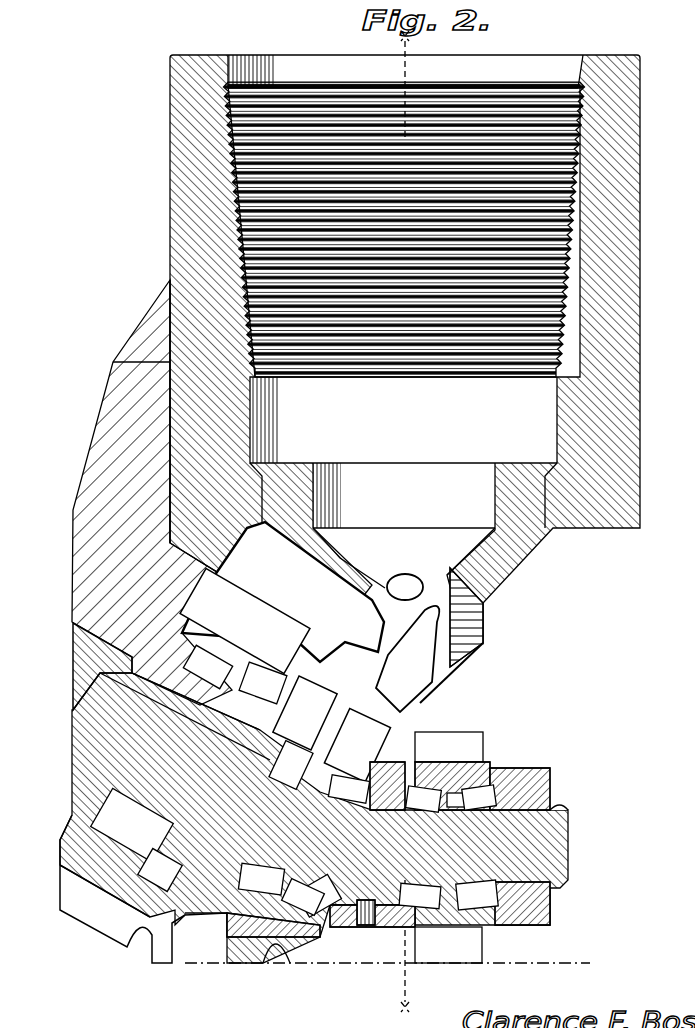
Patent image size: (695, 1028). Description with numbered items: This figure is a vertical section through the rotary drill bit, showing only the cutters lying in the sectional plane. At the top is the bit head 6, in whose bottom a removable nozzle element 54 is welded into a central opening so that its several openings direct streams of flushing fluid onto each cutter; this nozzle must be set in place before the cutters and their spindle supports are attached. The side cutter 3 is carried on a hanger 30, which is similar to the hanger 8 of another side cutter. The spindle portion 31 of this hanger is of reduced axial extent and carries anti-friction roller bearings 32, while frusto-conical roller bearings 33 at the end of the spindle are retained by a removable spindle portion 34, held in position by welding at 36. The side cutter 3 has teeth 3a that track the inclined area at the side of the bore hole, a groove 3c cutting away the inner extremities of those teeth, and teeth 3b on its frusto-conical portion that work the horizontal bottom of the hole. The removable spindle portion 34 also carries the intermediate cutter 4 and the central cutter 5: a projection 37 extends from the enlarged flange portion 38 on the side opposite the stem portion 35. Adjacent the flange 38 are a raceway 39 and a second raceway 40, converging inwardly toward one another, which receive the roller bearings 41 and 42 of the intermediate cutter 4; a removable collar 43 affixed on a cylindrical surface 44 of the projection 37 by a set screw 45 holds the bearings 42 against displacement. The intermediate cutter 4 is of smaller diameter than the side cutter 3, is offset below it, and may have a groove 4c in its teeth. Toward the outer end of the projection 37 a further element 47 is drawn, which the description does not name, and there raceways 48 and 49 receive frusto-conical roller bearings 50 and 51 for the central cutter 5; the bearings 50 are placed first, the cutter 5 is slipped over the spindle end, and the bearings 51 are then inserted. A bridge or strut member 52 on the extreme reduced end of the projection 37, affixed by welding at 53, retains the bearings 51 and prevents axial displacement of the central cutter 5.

The bit head 6 is at (640, 320).
The removable nozzle element 54 is at (402, 475).
The hanger 30 is at (82, 586).
The welding 36 is at (73, 652).
The stem portion 35 is at (112, 731).
The removable spindle portion 34 is at (218, 760).
The spindle portion 31 is at (115, 792).
The side cutter 3 is at (60, 889).
The teeth 3a is at (105, 925).
The groove 3c is at (140, 943).
The teeth 3b is at (165, 958).
The intermediate cutter 4 is at (265, 920).
The groove 4c is at (275, 960).
The cylindrical surface 44 is at (330, 905).
The set screw 45 is at (365, 918).
The enlarged flange portion 38 is at (212, 890).
The projection 37 is at (392, 905).
The removable collar 43 is at (402, 910).
The hanger 8 is at (389, 726).
The central cutter 5 is at (470, 920).
The anti-friction roller bearings 32 is at (205, 663).
The frusto-conical roller bearings 33 is at (262, 686).
The raceway 39 is at (290, 770).
The roller bearings 41 is at (385, 605).
The second raceway 40 is at (345, 775).
The roller bearings 42 is at (350, 790).
The cutter 47 is at (402, 800).
The raceway 48 is at (425, 795).
The frusto-conical antifriction roller bearings 50 is at (448, 807).
The raceway 49 is at (480, 795).
The frusto-conical antifriction roller bearings 51 is at (482, 793).
The bridge or strut member 52 is at (530, 785).
The welding 53 is at (563, 808).